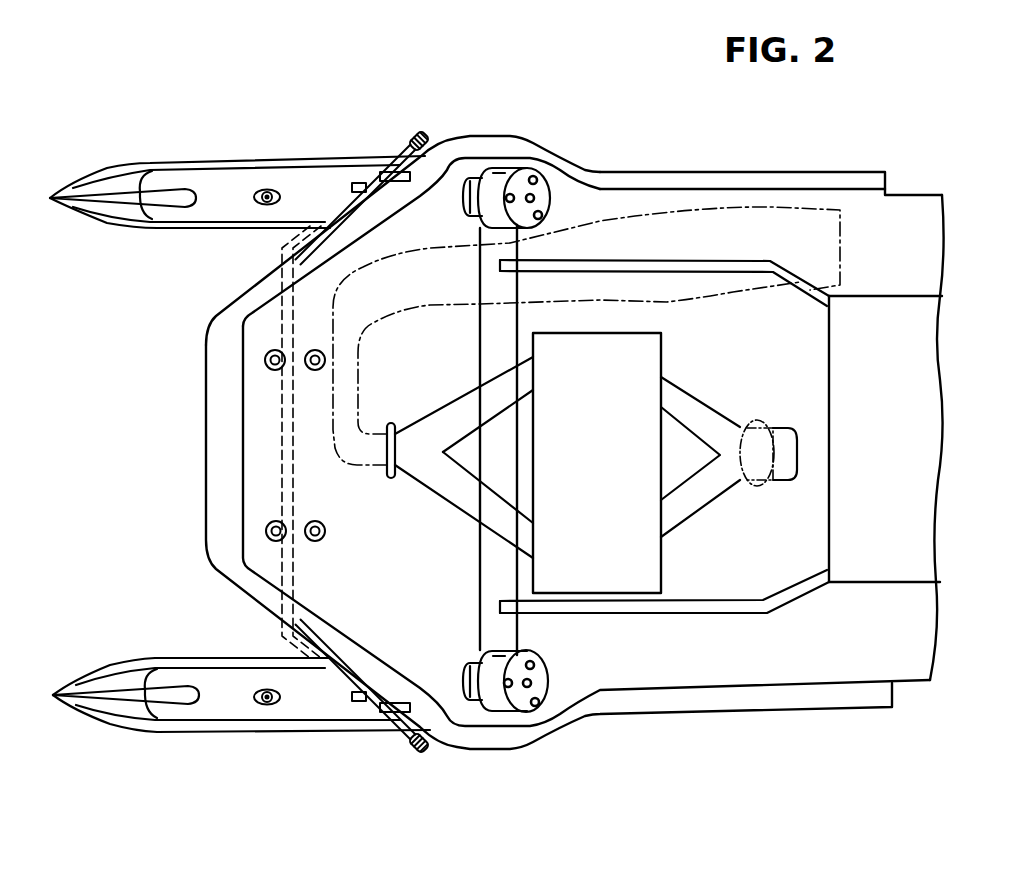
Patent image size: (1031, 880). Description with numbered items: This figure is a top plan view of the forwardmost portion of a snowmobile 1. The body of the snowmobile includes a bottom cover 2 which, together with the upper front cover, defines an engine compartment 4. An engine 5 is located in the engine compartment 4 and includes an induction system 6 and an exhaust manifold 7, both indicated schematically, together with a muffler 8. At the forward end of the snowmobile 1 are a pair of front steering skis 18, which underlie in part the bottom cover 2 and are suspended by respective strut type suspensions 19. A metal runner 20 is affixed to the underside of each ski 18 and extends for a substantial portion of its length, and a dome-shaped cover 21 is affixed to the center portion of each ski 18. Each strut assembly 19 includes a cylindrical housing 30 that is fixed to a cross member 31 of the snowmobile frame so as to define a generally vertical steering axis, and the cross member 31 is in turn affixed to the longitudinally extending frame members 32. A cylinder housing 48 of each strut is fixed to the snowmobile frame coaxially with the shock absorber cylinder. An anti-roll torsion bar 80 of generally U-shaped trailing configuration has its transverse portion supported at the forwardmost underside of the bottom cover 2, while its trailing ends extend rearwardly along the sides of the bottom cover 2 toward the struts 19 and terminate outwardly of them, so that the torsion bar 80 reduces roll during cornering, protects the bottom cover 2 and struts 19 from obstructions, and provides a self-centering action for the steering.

The snowmobile 1 is at (932, 436).
The bottom cover 2 is at (637, 678).
The engine compartment 4 is at (699, 622).
The engine 5 is at (643, 368).
The induction system 6 is at (720, 427).
The exhaust manifold 7 is at (417, 480).
The muffler 8 is at (686, 207).
The front steering ski 18 is at (253, 162).
The strut type suspension 19 is at (506, 148).
The metal runner 20 is at (218, 182).
The cover 21 is at (287, 710).
The cylindrical housing 30 is at (477, 176).
The cross member 31 is at (480, 578).
The longitudinally extending frame member 32 is at (717, 258).
The cylinder housing 48 is at (512, 170).
The anti-roll torsion bar 80 is at (288, 487).